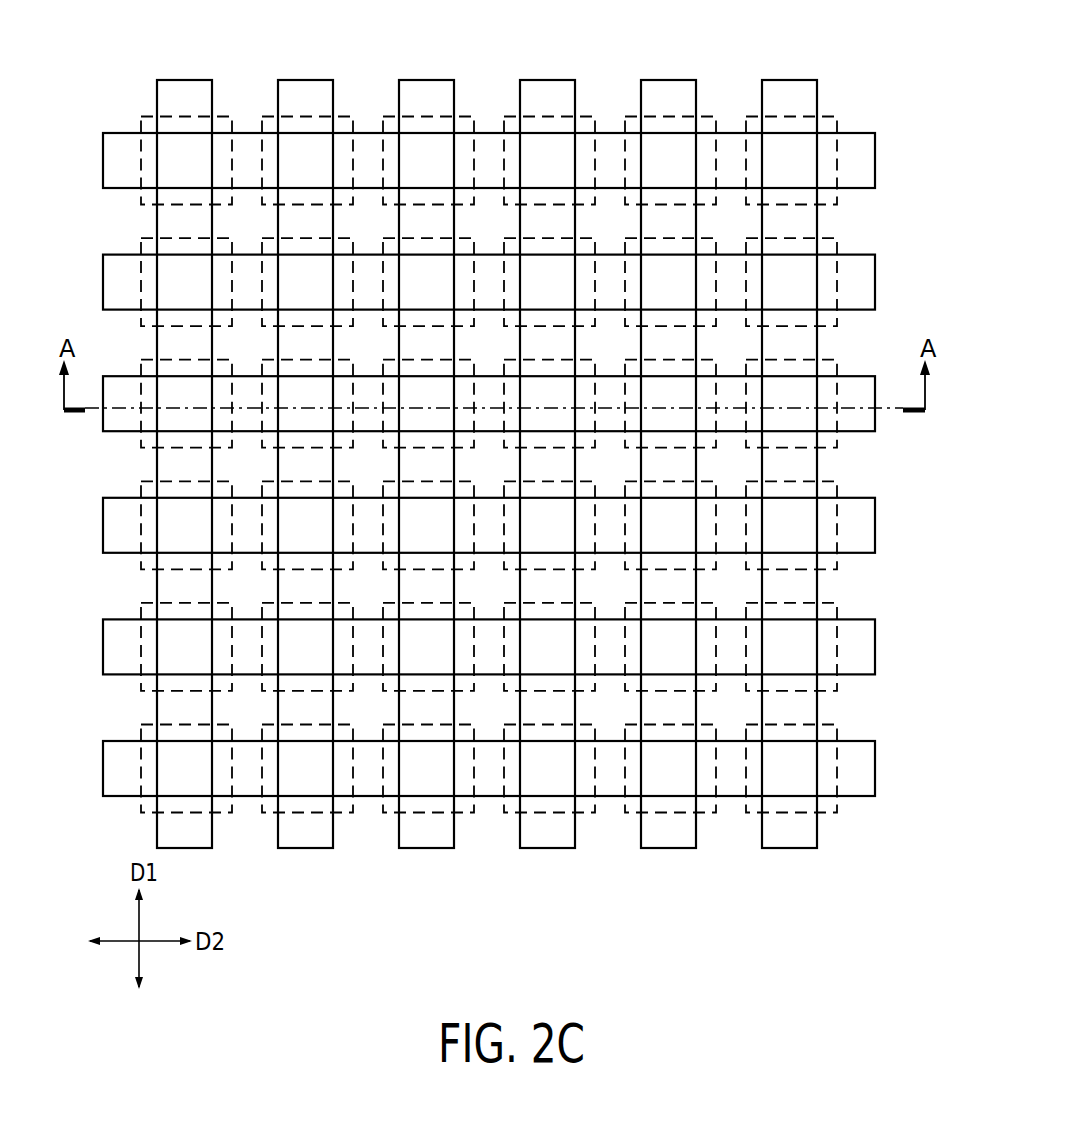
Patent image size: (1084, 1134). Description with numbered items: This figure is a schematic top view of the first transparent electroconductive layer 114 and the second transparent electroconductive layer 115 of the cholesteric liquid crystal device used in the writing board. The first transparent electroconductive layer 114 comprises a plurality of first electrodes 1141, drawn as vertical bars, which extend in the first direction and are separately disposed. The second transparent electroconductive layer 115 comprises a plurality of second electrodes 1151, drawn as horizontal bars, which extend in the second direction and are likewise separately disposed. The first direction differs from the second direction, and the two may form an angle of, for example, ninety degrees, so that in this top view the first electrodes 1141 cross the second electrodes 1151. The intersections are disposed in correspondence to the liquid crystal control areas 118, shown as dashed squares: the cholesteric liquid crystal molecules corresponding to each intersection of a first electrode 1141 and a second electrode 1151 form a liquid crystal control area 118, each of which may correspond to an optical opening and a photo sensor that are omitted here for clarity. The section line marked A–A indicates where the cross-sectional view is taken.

The first transparent electroconductive layer 114 is at (509, 430).
The first electrode 1141 is at (423, 79).
The second transparent electroconductive layer 115 is at (521, 497).
The second electrode 1151 is at (853, 180).
The liquid crystal control area 118 is at (268, 112).